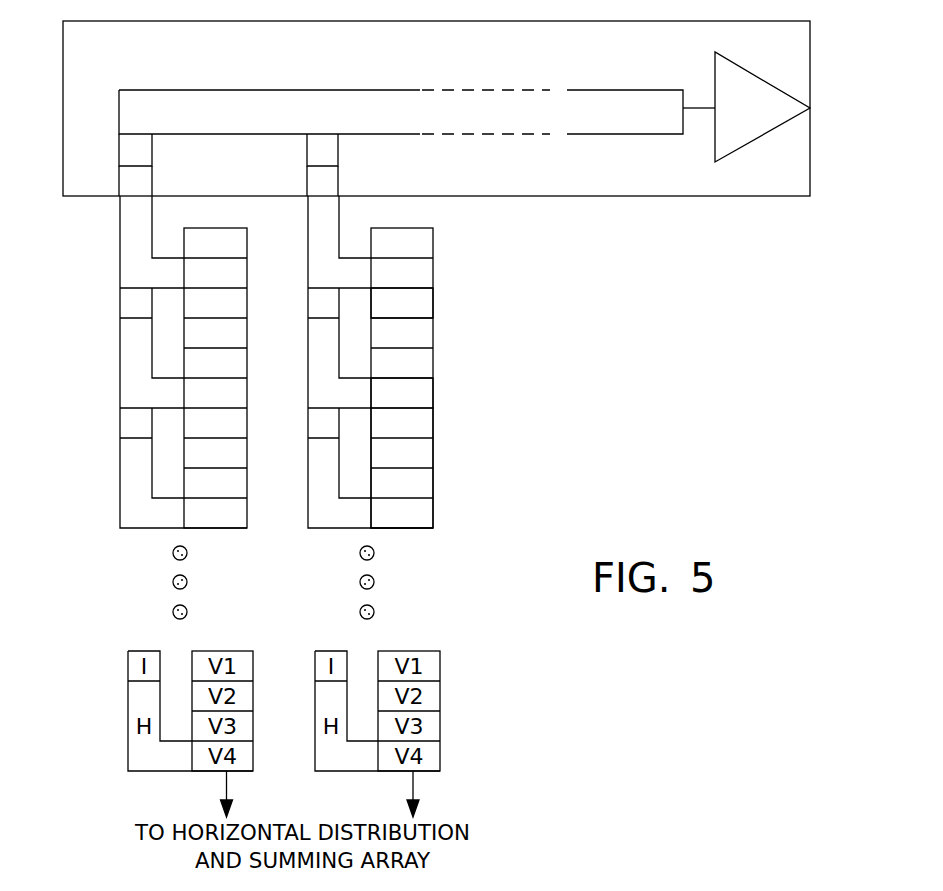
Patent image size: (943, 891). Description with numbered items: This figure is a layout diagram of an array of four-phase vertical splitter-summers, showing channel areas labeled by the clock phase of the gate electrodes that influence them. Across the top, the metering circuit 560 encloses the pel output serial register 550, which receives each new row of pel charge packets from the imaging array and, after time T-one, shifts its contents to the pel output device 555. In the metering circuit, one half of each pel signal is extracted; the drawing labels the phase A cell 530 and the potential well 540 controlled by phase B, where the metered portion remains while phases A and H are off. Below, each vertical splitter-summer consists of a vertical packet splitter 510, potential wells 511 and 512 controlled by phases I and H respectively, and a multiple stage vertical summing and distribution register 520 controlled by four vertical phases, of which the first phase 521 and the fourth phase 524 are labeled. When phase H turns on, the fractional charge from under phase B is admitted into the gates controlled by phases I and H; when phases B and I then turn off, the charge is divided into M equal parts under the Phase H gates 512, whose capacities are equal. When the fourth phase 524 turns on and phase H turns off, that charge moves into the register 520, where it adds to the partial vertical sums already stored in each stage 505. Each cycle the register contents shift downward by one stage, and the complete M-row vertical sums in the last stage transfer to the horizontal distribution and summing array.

The metering circuit 560 is at (436, 108).
The pel output serial register 550 is at (213, 90).
The A transfer cells 530 is at (307, 152).
The potential well controlled by phase B 540 is at (307, 181).
The pel output device 555 is at (763, 135).
The vertical packet splitter 510 is at (128, 363).
The potential well controlled by phase I 511 is at (119, 305).
The potential well controlled by phase H 512 is at (119, 386).
The vertical summing and distribution register 520 is at (439, 362).
The phase V1 521 is at (434, 305).
The phase V4 524 is at (465, 372).
The stage 505 is at (433, 410).